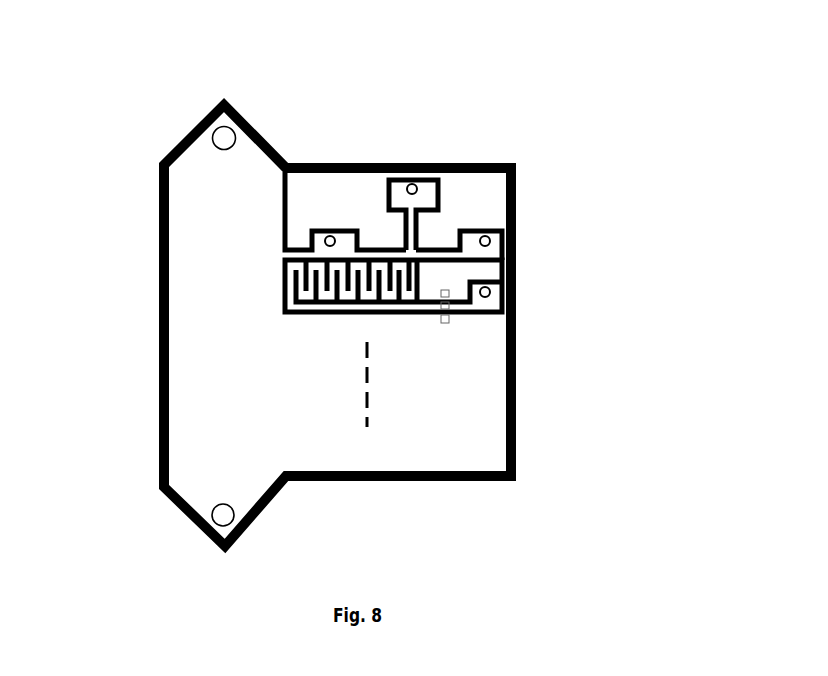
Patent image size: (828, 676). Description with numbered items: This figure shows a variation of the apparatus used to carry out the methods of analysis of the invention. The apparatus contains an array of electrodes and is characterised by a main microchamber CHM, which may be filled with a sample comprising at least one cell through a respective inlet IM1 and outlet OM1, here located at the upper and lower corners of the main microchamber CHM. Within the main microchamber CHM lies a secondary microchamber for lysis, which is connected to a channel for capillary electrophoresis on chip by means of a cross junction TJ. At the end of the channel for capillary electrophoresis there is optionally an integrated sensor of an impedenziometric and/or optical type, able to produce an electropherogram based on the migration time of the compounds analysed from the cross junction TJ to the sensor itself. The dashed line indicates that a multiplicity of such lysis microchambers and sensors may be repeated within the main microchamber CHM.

The main microchamber CHM is at (237, 178).
The inlet IM1 is at (215, 133).
The outlet OM1 is at (219, 526).
The cross junction TJ is at (428, 240).